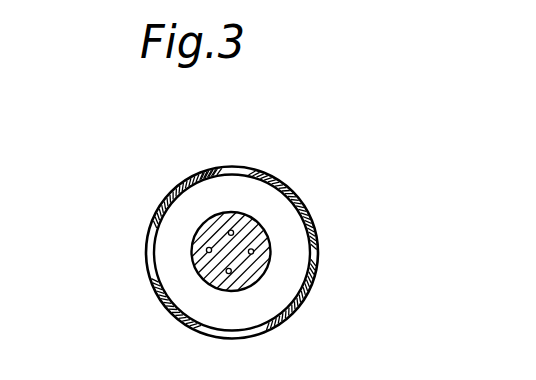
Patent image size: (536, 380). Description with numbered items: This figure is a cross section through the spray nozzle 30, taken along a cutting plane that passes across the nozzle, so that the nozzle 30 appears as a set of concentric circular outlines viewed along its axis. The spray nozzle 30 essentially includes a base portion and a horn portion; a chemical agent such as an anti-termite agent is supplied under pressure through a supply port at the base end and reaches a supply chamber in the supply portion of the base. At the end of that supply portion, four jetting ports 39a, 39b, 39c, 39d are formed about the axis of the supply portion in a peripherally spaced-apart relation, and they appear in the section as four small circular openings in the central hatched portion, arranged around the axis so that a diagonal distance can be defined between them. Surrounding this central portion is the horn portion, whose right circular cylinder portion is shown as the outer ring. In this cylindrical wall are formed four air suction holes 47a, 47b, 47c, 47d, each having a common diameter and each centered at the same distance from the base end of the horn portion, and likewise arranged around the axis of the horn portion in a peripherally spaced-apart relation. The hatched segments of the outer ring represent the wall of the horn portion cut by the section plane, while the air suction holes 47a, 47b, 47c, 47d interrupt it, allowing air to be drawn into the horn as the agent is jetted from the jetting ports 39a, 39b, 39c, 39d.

The spray nozzle 30 is at (337, 163).
The jetting port 39a is at (231, 231).
The jetting port 39b is at (207, 250).
The jetting port 39c is at (228, 272).
The jetting port 39d is at (253, 252).
The air suction hole 47a is at (208, 171).
The air suction hole 47b is at (148, 267).
The air suction hole 47c is at (245, 336).
The air suction hole 47d is at (312, 236).